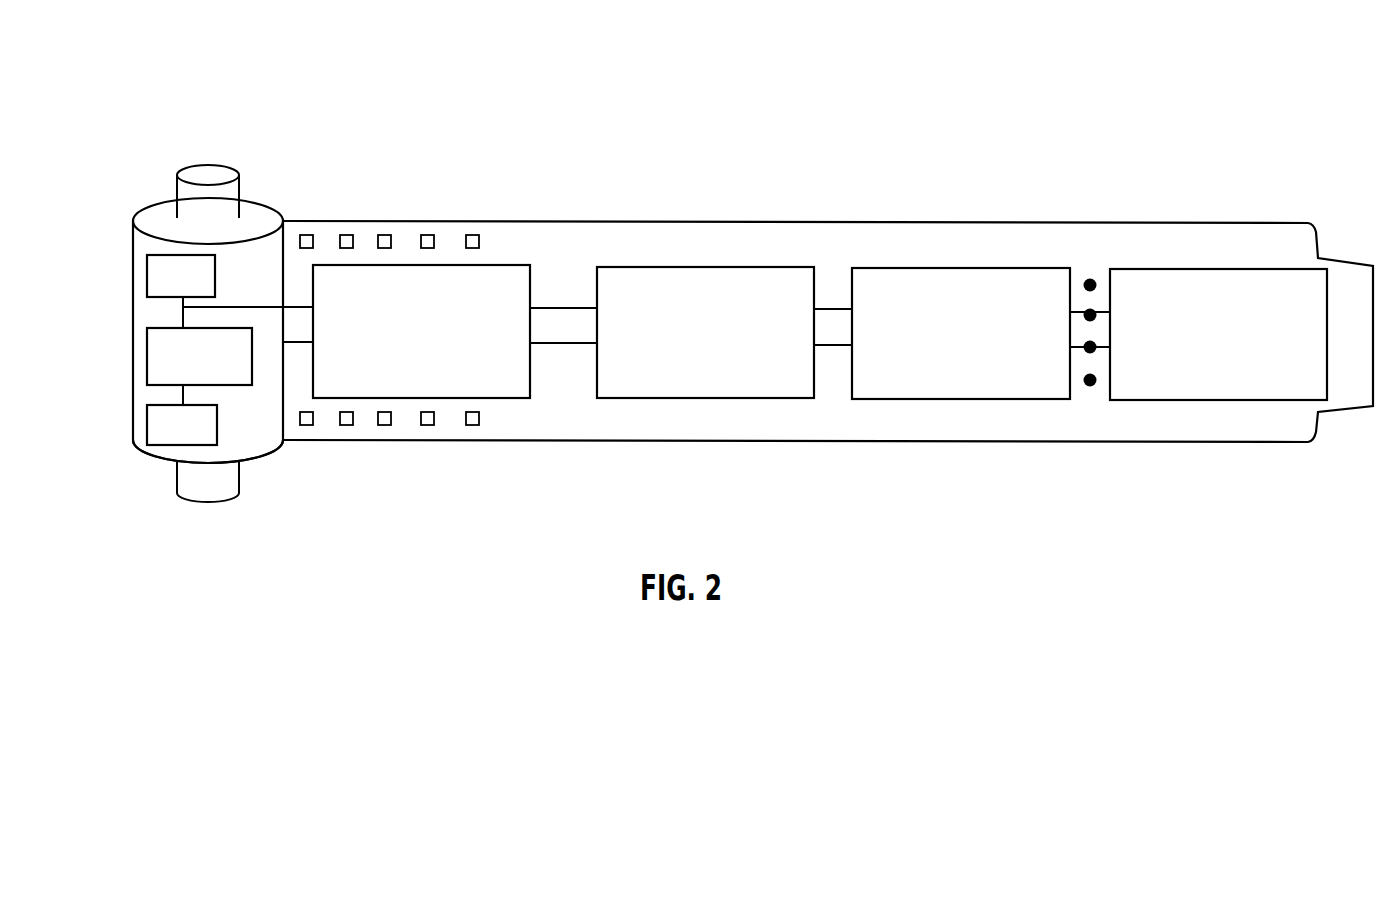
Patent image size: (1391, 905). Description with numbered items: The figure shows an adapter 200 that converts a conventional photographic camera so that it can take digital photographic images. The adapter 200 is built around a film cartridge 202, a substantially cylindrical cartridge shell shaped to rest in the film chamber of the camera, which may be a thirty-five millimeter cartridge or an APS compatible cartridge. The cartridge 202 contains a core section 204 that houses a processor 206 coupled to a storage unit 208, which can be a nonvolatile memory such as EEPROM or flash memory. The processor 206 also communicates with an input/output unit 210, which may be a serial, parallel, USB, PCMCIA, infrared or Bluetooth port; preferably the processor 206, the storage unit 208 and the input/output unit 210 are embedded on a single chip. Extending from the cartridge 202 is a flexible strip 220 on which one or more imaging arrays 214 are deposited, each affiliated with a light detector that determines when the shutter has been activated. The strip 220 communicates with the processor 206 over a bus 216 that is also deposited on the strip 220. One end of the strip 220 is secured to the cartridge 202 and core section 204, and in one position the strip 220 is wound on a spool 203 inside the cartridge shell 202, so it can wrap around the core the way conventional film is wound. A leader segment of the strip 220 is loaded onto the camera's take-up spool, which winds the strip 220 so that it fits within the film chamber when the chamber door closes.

The adapter 200 is at (298, 68).
The film cartridge 202 is at (253, 215).
The spool 203 is at (200, 173).
The core section 204 is at (260, 435).
The processor 206 is at (147, 277).
The storage unit 208 is at (147, 362).
The input/output unit 210 is at (147, 427).
The imaging array 214 is at (1311, 389).
The bus 216 is at (552, 307).
The flexible strip 220 is at (358, 233).